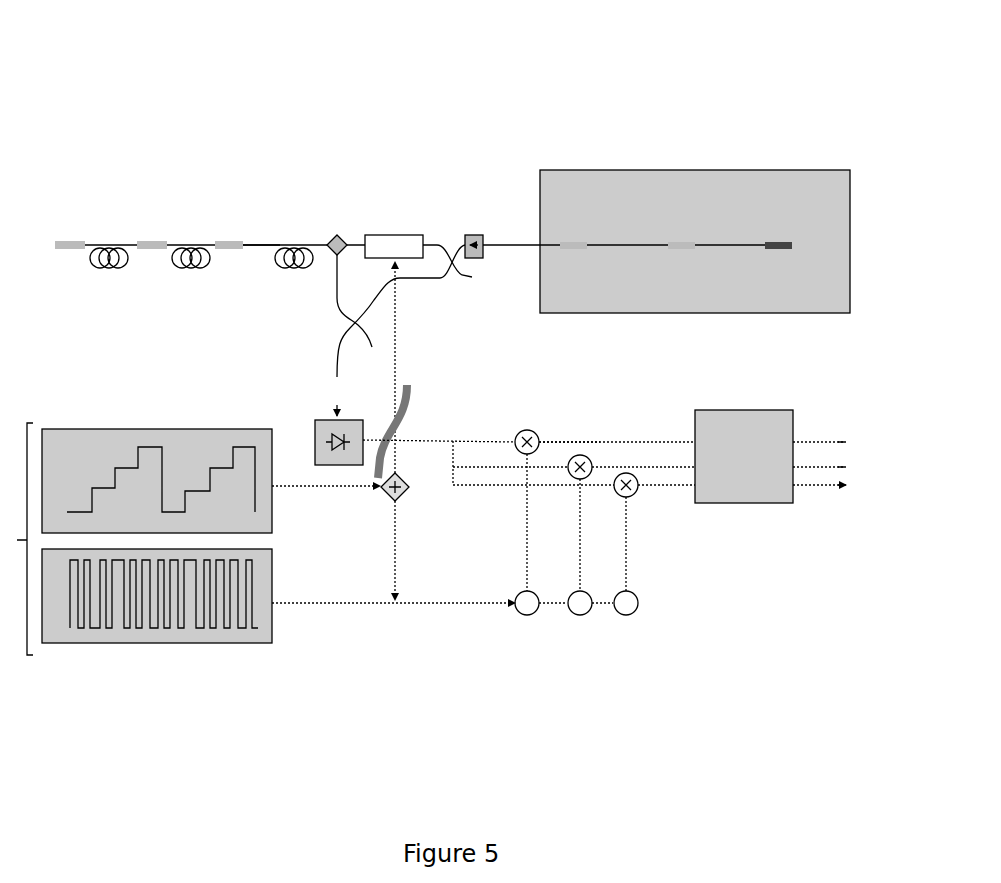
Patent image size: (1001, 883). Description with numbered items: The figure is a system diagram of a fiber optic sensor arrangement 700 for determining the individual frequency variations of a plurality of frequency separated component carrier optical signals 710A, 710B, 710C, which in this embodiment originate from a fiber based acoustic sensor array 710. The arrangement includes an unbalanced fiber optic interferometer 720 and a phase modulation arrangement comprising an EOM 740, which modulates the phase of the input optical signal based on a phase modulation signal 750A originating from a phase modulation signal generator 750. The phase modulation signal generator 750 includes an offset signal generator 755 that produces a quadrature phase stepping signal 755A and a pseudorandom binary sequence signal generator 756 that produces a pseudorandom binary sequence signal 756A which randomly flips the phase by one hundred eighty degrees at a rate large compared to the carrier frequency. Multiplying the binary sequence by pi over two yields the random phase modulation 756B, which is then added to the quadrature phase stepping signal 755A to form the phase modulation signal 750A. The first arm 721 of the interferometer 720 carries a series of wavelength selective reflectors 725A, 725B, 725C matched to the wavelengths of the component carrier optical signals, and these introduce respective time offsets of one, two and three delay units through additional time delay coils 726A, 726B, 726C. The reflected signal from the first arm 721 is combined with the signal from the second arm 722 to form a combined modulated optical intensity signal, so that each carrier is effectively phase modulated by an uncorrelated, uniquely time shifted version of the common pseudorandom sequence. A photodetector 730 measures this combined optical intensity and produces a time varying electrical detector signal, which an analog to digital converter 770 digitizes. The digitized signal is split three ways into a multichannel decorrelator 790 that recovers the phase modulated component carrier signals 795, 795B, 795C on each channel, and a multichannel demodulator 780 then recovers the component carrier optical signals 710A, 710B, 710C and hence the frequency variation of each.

The fiber optic sensor arrangement 700 is at (97, 134).
The fiber based acoustic sensor array 710 is at (619, 170).
The frequency separated component carrier optical signal 710A is at (572, 249).
The frequency separated component carrier optical signal 710B is at (680, 249).
The frequency separated component carrier optical signal 710C is at (786, 245).
The unbalanced fiber optic interferometer 720 is at (336, 230).
The first arm 721 is at (266, 243).
The second arm 722 is at (336, 301).
The wavelength selective reflector 725A is at (228, 241).
The wavelength selective reflector 725B is at (147, 241).
The wavelength selective reflector 725C is at (64, 241).
The time delay coil 726A is at (285, 268).
The time delay coil 726B is at (185, 268).
The time delay coil 726C is at (97, 268).
The photodetector 730 is at (356, 420).
The EOM 740 is at (396, 232).
The phase modulation signal generator 750 is at (28, 416).
The phase modulation signal 750A is at (400, 290).
The offset signal generator 755 is at (275, 512).
The quadrature phase stepping signal 755A is at (302, 486).
The pseudorandom binary sequence signal generator 756 is at (275, 620).
The pseudorandom binary sequence signal 756A is at (350, 600).
The random phase modulation 756B is at (400, 505).
The analog to digital converter 770 is at (414, 383).
The multichannel demodulator 780 is at (724, 406).
The multichannel decorrelator 790 is at (592, 425).
The phase modulated component carrier signal 795 is at (646, 440).
The phase modulated component carrier signal 795B is at (615, 467).
The phase modulated component carrier signal 795C is at (644, 486).